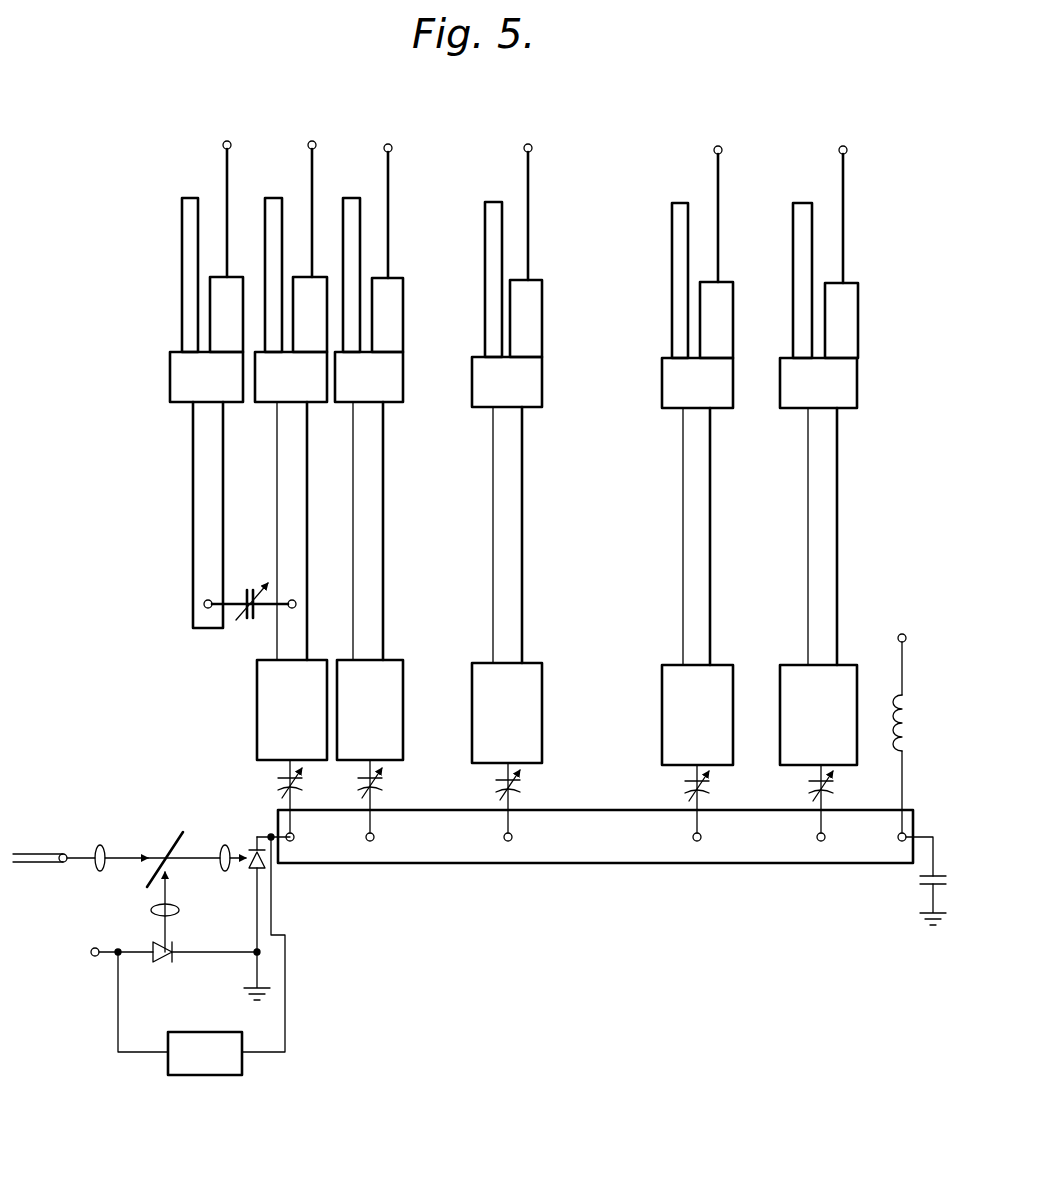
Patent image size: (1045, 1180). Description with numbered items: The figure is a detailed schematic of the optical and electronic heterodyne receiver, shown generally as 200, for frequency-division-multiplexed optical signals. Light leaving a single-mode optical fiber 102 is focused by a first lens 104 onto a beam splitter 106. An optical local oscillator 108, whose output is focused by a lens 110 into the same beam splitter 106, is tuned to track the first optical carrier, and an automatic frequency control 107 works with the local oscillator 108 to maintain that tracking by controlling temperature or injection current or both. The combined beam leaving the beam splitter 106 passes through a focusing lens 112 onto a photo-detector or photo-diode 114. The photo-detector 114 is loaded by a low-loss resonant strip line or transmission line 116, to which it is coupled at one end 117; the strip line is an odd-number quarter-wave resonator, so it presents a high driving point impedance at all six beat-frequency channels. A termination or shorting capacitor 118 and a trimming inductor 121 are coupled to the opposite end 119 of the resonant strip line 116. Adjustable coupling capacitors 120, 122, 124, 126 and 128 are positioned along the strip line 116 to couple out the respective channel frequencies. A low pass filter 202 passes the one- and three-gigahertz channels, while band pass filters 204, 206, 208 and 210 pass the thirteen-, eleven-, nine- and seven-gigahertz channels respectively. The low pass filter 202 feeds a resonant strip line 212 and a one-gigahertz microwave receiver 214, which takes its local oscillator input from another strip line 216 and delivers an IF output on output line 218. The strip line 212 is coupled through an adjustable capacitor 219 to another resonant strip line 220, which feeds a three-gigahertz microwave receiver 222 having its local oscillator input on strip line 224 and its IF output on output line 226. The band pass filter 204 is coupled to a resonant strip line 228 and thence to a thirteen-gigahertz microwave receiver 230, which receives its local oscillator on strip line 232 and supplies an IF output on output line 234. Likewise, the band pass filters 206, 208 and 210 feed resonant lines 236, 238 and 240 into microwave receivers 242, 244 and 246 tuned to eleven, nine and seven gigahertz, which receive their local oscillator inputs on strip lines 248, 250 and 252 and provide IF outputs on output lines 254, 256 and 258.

The single-mode optical fiber 102 is at (38, 850).
The first lens 104 is at (97, 868).
The beam splitter 106 is at (165, 845).
The automatic frequency control 107 is at (192, 1078).
The optical local oscillator 108 is at (155, 965).
The lens 110 is at (153, 913).
The focusing lens 112 is at (220, 870).
The photo-detector 114 is at (262, 875).
The resonant strip line 116 is at (608, 868).
The end of resonant strip line 117 is at (262, 828).
The shorting capacitor 118 is at (942, 872).
The end of resonant strip line 119 is at (898, 872).
The adjustable coupling capacitor 120 is at (298, 784).
The trimming inductor 121 is at (910, 715).
The adjustable coupling capacitor 122 is at (380, 784).
The adjustable coupling capacitor 124 is at (518, 786).
The adjustable coupling capacitor 126 is at (708, 787).
The adjustable coupling capacitor 128 is at (832, 787).
The optical and electronic heterodyne receiver 200 is at (660, 118).
The low pass filter 202 is at (257, 688).
The band pass filter 204 is at (403, 662).
The band pass filter 206 is at (542, 665).
The band pass filter 208 is at (733, 667).
The band pass filter 210 is at (857, 667).
The resonant strip line 212 is at (307, 530).
The 1 GHz microwave receiver 214 is at (256, 405).
The strip line 216 is at (265, 215).
The output line 218 is at (312, 148).
The variable capacitor 219 is at (240, 596).
The resonant strip line 220 is at (193, 522).
The 3 GHz microwave receiver 222 is at (170, 397).
The strip line 224 is at (180, 218).
The output line 226 is at (225, 148).
The resonant strip line 228 is at (385, 530).
The microwave receiver 230 is at (403, 398).
The strip line 232 is at (343, 215).
The output line 234 is at (388, 150).
The resonant line 236 is at (523, 530).
The resonant line 238 is at (710, 520).
The resonant line 240 is at (838, 520).
The microwave receiver 242 is at (542, 400).
The microwave receiver 244 is at (733, 402).
The microwave receiver 246 is at (857, 402).
The strip line 248 is at (485, 218).
The strip line 250 is at (672, 218).
The strip line 252 is at (793, 218).
The output line 254 is at (528, 152).
The output line 256 is at (718, 155).
The output line 258 is at (843, 157).